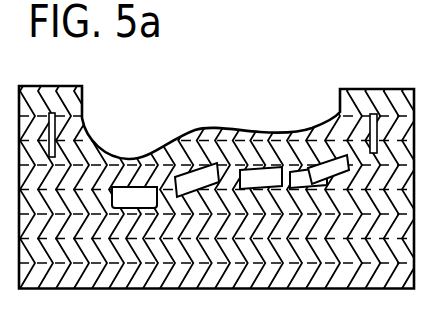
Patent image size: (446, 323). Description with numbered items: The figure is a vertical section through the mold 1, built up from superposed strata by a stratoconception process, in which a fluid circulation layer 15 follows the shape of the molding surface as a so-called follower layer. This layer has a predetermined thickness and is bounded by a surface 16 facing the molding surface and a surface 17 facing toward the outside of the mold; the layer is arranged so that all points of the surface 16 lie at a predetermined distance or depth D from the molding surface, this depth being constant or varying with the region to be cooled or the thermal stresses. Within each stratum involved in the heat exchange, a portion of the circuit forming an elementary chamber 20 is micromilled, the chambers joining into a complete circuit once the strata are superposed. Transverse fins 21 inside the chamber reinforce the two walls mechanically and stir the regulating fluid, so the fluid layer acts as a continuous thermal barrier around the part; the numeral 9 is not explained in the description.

The elementary chamber 20 is at (132, 197).
The distance or depth D is at (193, 180).
The surface facing the molding surface 16 is at (261, 178).
The transverse fins 21 is at (287, 178).
The fluid circulation layer 15 is at (325, 168).
The surface facing toward the outside of the mold 17 is at (414, 165).
The body layer 9 is at (441, 176).
The body 1 is at (443, 213).